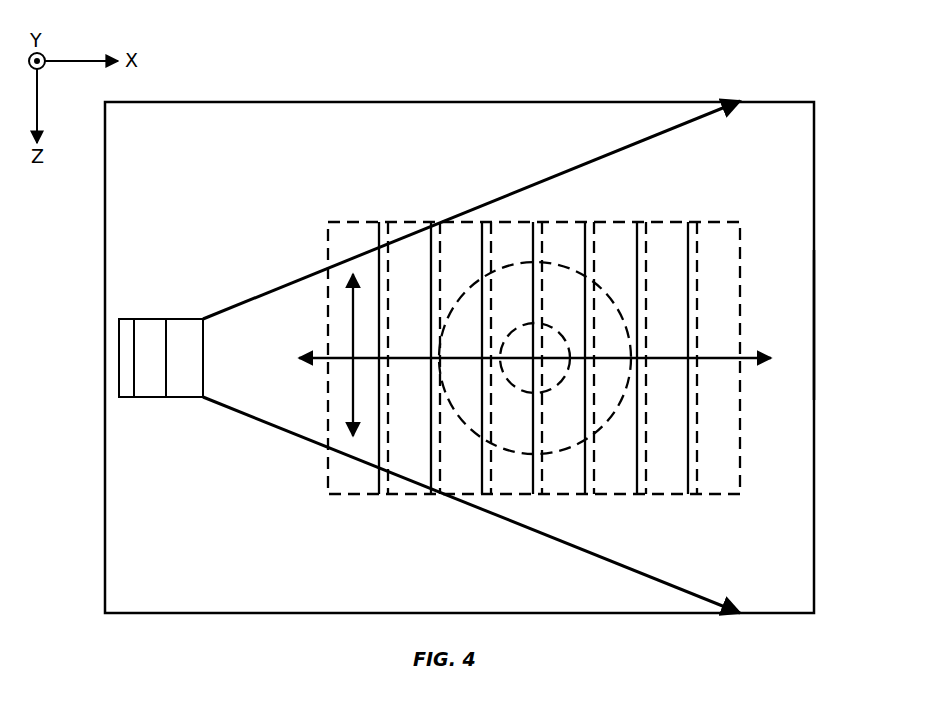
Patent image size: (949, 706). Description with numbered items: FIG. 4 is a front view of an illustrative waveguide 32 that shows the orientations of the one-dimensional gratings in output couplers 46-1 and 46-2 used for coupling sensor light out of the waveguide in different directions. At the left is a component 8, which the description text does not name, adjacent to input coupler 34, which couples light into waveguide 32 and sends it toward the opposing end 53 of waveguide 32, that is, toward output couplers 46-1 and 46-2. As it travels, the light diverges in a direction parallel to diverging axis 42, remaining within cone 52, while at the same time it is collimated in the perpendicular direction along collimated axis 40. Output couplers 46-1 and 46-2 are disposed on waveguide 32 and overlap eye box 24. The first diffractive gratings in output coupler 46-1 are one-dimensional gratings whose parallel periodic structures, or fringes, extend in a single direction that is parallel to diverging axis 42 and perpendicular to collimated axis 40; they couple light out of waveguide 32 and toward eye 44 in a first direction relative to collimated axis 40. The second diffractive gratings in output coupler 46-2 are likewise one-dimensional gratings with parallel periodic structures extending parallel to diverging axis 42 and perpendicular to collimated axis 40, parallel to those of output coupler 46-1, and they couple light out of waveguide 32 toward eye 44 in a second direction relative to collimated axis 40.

The light source 8 is at (125, 400).
The eye box 24 is at (708, 497).
The waveguide 32 is at (452, 112).
The input coupler 34 is at (183, 330).
The collimated axis 40 is at (750, 361).
The diverging axis 42 is at (352, 302).
The eye 44 is at (563, 266).
The output coupler 46-1 is at (431, 474).
The output coupler 46-2 is at (543, 477).
The cone 52 is at (244, 306).
The opposing end 53 is at (818, 327).